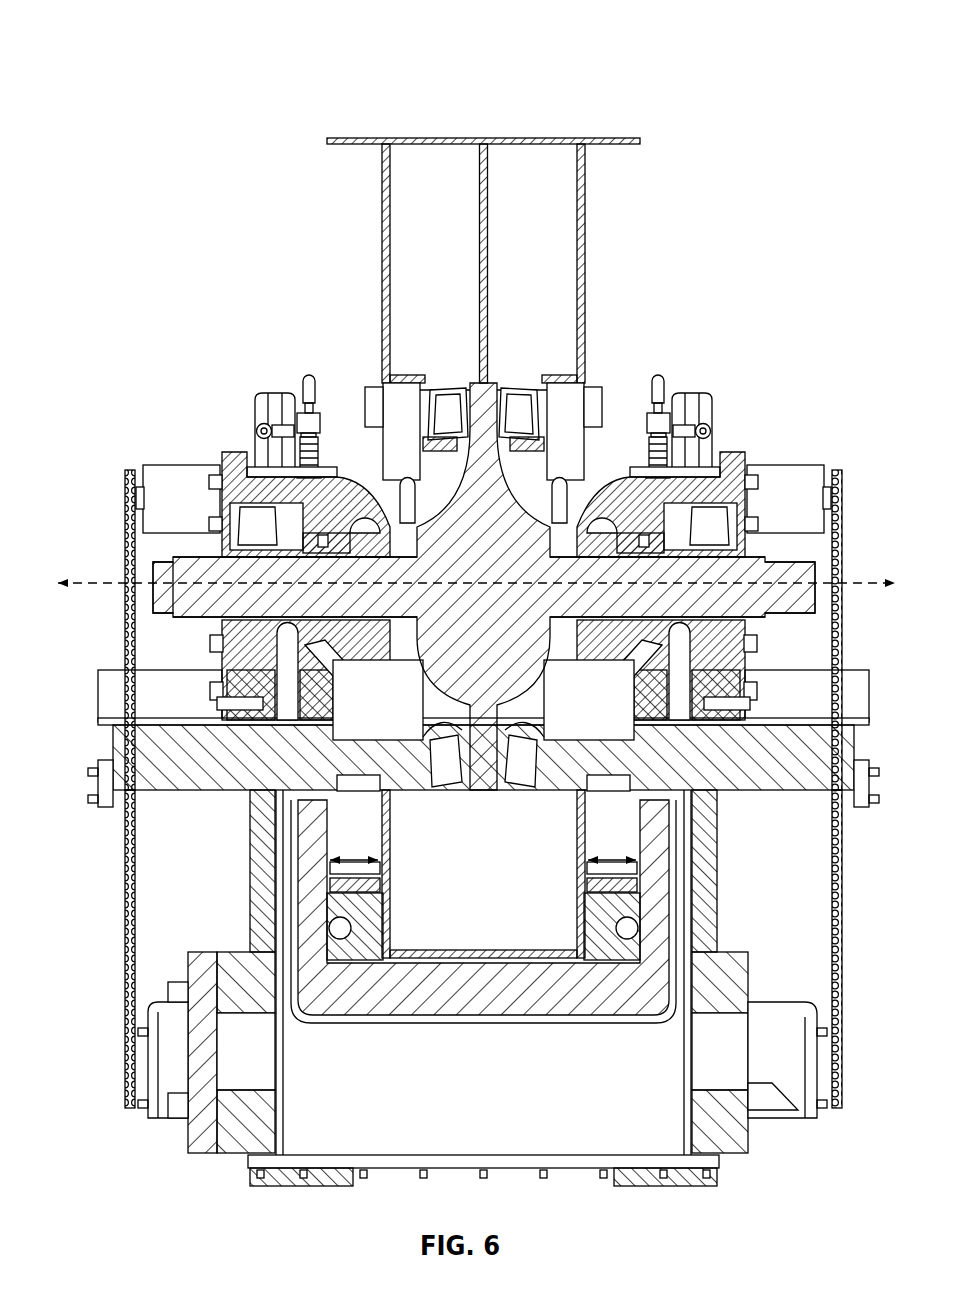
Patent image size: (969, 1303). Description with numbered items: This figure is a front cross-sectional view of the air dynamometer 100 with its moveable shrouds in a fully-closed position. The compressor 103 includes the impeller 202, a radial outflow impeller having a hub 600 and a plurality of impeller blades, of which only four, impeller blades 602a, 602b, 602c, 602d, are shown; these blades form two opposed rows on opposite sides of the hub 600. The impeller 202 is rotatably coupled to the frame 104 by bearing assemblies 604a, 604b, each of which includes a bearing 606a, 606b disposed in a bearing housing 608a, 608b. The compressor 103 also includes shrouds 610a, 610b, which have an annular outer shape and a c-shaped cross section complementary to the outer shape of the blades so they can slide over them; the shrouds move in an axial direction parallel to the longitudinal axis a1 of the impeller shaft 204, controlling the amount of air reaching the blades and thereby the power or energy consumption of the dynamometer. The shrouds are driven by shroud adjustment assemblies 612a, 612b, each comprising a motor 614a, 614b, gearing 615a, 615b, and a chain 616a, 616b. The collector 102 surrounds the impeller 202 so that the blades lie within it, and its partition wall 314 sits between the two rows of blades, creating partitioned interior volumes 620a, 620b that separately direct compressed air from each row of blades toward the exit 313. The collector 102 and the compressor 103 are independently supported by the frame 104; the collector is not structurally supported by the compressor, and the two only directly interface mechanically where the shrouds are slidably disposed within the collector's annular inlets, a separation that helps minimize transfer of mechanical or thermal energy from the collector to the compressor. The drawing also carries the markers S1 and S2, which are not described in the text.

The air dynamometer 100 is at (808, 33).
The collector 102 is at (630, 125).
The compressor 103 is at (770, 285).
The frame 104 is at (182, 1170).
The exit 313 is at (370, 125).
The partition wall 314 is at (487, 190).
The partitioned interior volume 620a is at (464, 255).
The partitioned interior volume 620b is at (567, 255).
The impeller blade 602a is at (457, 390).
The impeller blade 602b is at (513, 390).
The impeller blade 602c is at (437, 775).
The impeller blade 602d is at (512, 775).
The shroud 610a is at (410, 395).
The shroud 610b is at (545, 405).
The bearing assembly 604a is at (232, 413).
The bearing assembly 604b is at (745, 418).
The bearing housing 608a is at (225, 462).
The bearing housing 608b is at (745, 462).
The bearing 606a is at (228, 540).
The bearing 606b is at (653, 545).
The hub 600 is at (507, 526).
The impeller 202 is at (501, 602).
The impeller shaft 204 is at (812, 560).
The longitudinal axis a1 is at (876, 583).
The shroud adjustment assembly 612a is at (106, 630).
The shroud adjustment assembly 612b is at (848, 647).
The gearing 615a is at (133, 500).
The gearing 615b is at (848, 500).
The chain 616a is at (124, 880).
The chain 616b is at (845, 878).
The motor 614a is at (140, 1065).
The motor 614b is at (832, 1080).
The first spacing S1 is at (358, 858).
The second spacing S2 is at (615, 858).